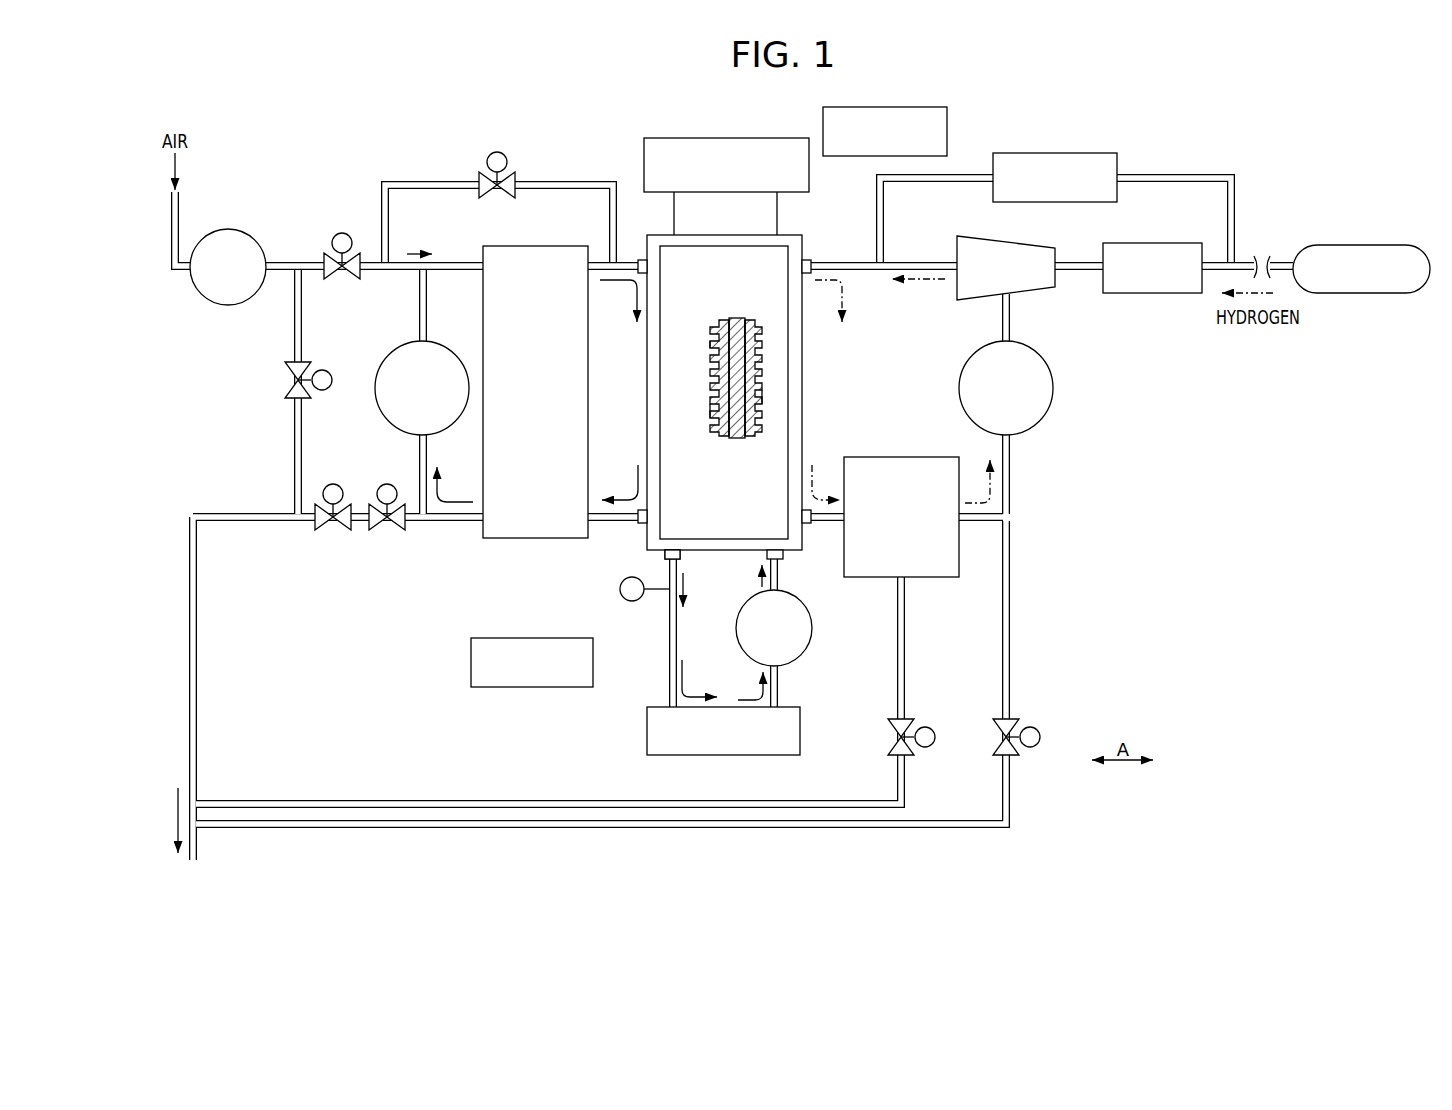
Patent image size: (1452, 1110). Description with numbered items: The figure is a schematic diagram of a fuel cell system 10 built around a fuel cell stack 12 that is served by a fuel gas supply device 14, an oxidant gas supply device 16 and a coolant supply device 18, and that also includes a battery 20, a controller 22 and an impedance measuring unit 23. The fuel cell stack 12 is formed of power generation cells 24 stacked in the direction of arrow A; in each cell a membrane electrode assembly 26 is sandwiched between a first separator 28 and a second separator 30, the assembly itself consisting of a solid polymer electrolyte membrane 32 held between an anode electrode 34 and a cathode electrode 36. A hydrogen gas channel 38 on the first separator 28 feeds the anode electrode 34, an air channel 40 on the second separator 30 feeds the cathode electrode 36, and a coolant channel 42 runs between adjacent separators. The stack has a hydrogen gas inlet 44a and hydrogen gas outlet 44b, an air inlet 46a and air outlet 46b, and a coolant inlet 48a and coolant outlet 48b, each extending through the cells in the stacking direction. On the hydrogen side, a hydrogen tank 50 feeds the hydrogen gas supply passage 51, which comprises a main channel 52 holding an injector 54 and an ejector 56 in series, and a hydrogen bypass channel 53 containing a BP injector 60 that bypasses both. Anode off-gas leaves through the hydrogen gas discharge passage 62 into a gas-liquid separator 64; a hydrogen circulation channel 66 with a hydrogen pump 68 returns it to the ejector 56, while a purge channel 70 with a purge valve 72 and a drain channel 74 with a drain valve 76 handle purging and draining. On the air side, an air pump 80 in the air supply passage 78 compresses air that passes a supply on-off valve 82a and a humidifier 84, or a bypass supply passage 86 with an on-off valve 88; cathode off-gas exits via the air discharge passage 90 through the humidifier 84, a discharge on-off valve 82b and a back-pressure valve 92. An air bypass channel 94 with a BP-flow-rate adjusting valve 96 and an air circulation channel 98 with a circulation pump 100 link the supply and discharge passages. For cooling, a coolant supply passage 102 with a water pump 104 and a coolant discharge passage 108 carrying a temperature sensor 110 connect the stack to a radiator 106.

The fuel cell system 10 is at (1308, 172).
The fuel cell stack 12 is at (806, 230).
The fuel gas supply device 14 is at (1138, 156).
The oxidant gas supply device 16 is at (390, 158).
The coolant supply device 18 is at (632, 745).
The battery 20 is at (528, 637).
The controller 22 is at (885, 107).
The impedance measuring unit 23 is at (747, 138).
The power generation cell 24 is at (778, 253).
The membrane electrode assembly 26 is at (751, 365).
The first separator 28 is at (763, 347).
The second separator 30 is at (715, 331).
The solid polymer electrolyte membrane 32 is at (736, 318).
The anode electrode 34 is at (752, 318).
The cathode electrode 36 is at (727, 318).
The hydrogen gas channel 38 is at (763, 398).
The air channel 40 is at (717, 349).
The coolant channel 42 is at (712, 414).
The hydrogen gas inlet 44a is at (814, 262).
The hydrogen gas outlet 44b is at (811, 526).
The air inlet 46a is at (640, 258).
The air outlet 46b is at (640, 526).
The coolant inlet 48a is at (765, 557).
The coolant outlet 48b is at (680, 562).
The hydrogen tank 50 is at (1362, 245).
The hydrogen gas supply passage 51 is at (1278, 262).
The main channel 52 is at (1081, 272).
The hydrogen bypass channel 53 is at (1165, 174).
The injector 54 is at (1150, 243).
The ejector 56 is at (1005, 240).
The BP injector 60 is at (1053, 153).
The hydrogen gas discharge passage 62 is at (977, 521).
The gas-liquid separator 64 is at (910, 457).
The hydrogen circulation channel 66 is at (1011, 466).
The hydrogen pump 68 is at (1051, 379).
The purge channel 70 is at (1011, 547).
The purge valve 72 is at (1030, 725).
The drain channel 74 is at (474, 801).
The drain valve 76 is at (928, 725).
The air supply passage 78 is at (282, 262).
The air pump 80 is at (233, 230).
The supply on-off valve 82a is at (342, 233).
The discharge on-off valve 82b is at (388, 483).
The humidifier 84 is at (536, 246).
The bypass supply passage 86 is at (570, 182).
The on-off valve 88 is at (498, 151).
The air discharge passage 90 is at (598, 521).
The back-pressure valve 92 is at (335, 483).
The air bypass channel 94 is at (302, 304).
The BP-flow-rate adjusting valve 96 is at (322, 370).
The air circulation channel 98 is at (420, 304).
The circulation pump 100 is at (389, 355).
The coolant supply passage 102 is at (778, 582).
The water pump 104 is at (808, 648).
The radiator 106 is at (647, 718).
The coolant discharge passage 108 is at (669, 643).
The temperature sensor 110 is at (622, 598).